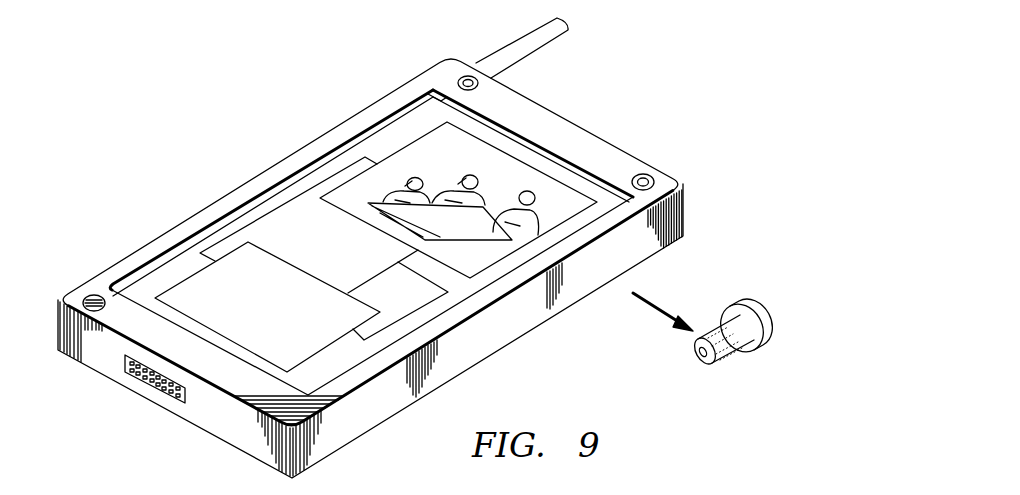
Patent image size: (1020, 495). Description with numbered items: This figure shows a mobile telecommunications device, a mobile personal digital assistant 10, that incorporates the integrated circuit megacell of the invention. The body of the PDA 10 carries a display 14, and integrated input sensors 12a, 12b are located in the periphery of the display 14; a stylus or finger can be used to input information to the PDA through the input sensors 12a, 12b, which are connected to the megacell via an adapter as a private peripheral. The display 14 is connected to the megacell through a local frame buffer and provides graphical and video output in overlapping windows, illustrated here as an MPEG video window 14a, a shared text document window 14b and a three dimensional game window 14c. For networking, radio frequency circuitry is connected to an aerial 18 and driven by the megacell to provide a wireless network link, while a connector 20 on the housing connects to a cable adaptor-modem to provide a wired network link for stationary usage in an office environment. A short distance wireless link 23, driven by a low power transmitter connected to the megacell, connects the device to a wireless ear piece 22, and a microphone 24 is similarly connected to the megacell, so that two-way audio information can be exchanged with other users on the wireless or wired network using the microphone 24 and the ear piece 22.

The mobile personal digital assistant 10 is at (577, 344).
The input sensor 12a is at (325, 158).
The input sensor 12b is at (551, 150).
The display 14 is at (142, 288).
The MPEG video window 14a is at (413, 150).
The shared text document window 14b is at (287, 212).
The three dimensional game window 14c is at (198, 282).
The aerial 18 is at (568, 30).
The connector 20 is at (137, 378).
The ear piece 22 is at (755, 318).
The short distance wireless link 23 is at (672, 303).
The microphone 24 is at (85, 295).